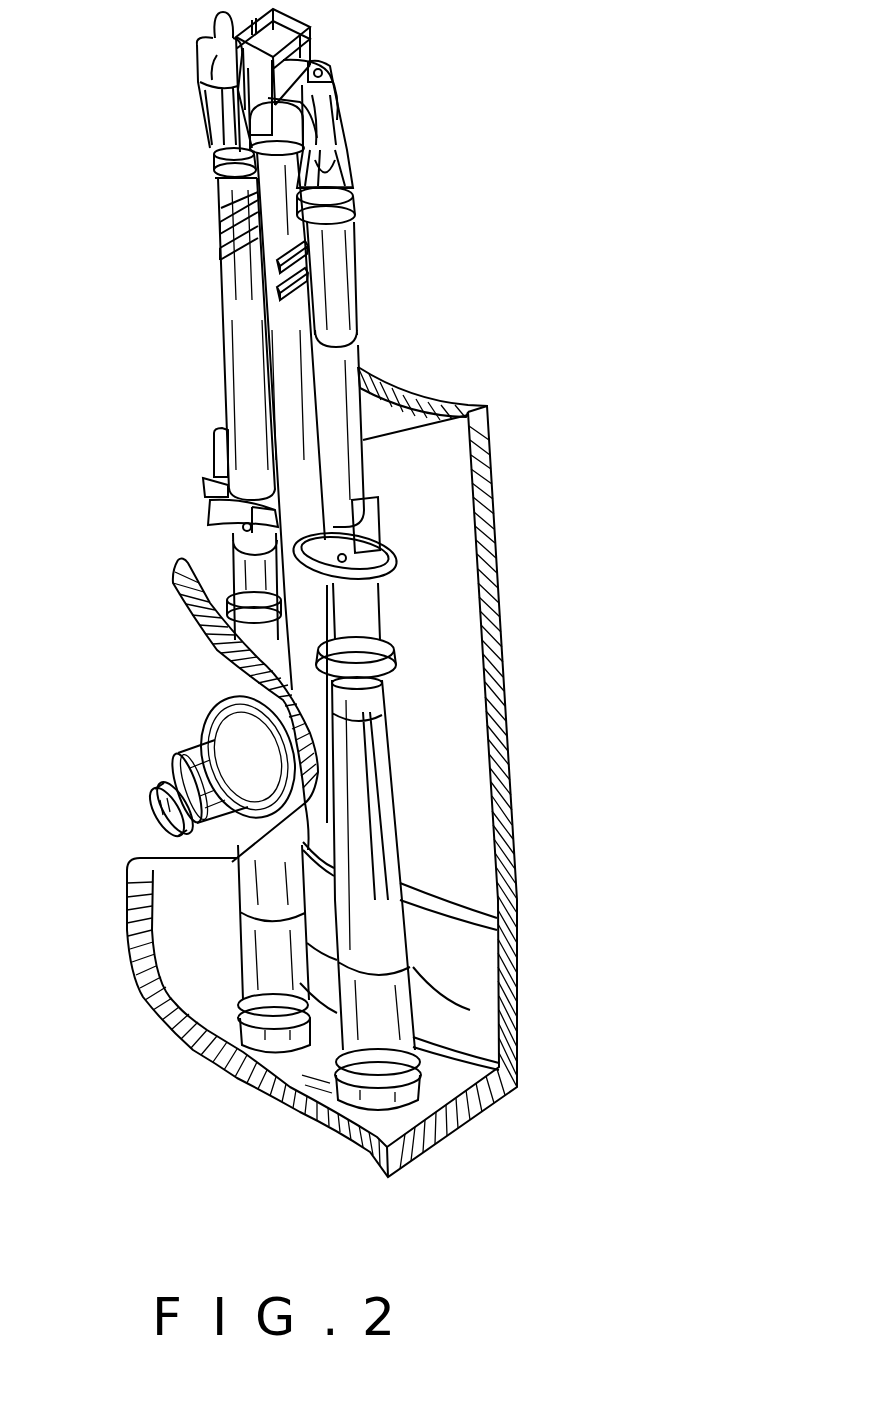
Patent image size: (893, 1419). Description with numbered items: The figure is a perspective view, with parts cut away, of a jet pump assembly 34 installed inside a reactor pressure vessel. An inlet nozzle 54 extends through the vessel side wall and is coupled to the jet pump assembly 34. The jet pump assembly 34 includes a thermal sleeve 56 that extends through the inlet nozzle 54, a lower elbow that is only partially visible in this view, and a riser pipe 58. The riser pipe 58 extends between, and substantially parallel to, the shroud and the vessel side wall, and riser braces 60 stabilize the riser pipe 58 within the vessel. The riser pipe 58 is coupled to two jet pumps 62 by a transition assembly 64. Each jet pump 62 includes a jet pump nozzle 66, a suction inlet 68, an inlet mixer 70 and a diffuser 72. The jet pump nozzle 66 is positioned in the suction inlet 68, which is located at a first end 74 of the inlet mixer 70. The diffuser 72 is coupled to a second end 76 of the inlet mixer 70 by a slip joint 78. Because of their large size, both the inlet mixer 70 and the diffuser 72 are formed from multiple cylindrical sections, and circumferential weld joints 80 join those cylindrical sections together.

The jet pump assembly 34 is at (320, 559).
The inlet nozzle 54 is at (180, 745).
The thermal sleeve 56 is at (150, 793).
The riser pipe 58 is at (395, 385).
The riser braces 60 is at (216, 218).
The jet pumps 62 is at (210, 318).
The transition assembly 64 is at (330, 52).
The jet pump nozzle 66 is at (217, 128).
The suction inlet 68 is at (210, 148).
The inlet mixer 70 is at (223, 370).
The diffuser 72 is at (397, 807).
The first end 74 is at (360, 213).
The second end 76 is at (412, 625).
The slip joint 78 is at (400, 658).
The circumferential weld joints 80 is at (215, 190).